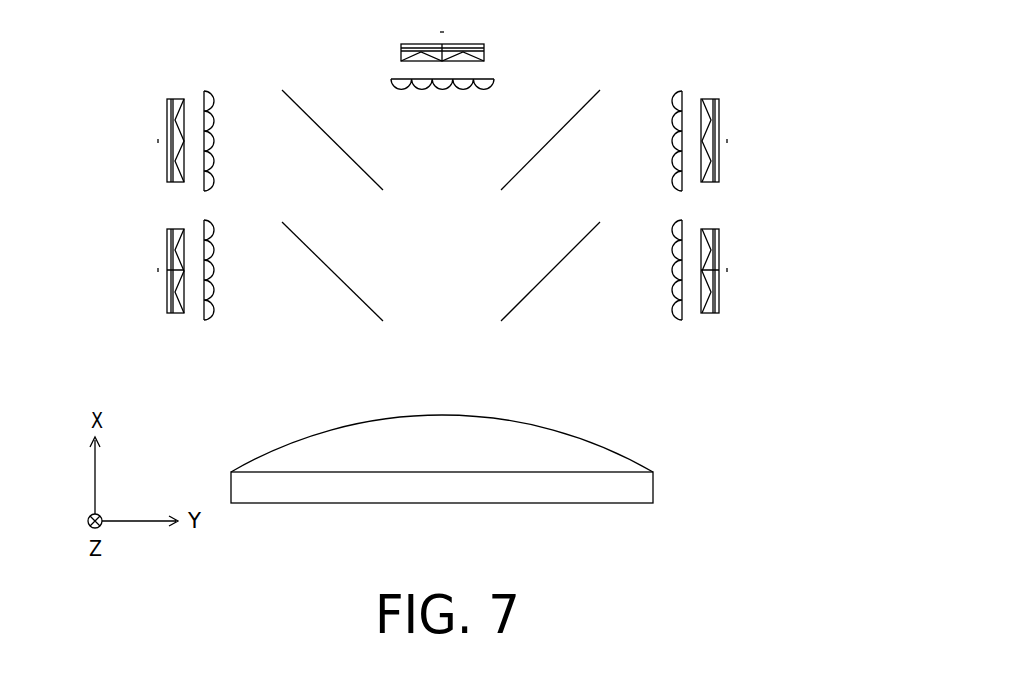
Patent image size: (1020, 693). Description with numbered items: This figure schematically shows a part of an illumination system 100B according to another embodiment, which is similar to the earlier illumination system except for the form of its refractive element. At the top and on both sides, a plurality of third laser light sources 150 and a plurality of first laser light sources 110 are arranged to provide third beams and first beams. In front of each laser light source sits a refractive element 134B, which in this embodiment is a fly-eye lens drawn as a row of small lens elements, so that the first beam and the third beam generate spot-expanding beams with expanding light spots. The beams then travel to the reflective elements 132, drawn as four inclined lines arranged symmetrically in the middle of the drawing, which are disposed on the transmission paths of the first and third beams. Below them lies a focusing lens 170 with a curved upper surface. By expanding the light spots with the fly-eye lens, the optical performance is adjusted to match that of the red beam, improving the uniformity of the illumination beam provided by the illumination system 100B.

The third laser light source 150 is at (484, 48).
The first laser light source 110 is at (167, 242).
The refractive element 134B is at (494, 86).
The reflective element 132 is at (370, 178).
The focusing lens 170 is at (647, 490).
The illumination system 100B is at (768, 536).